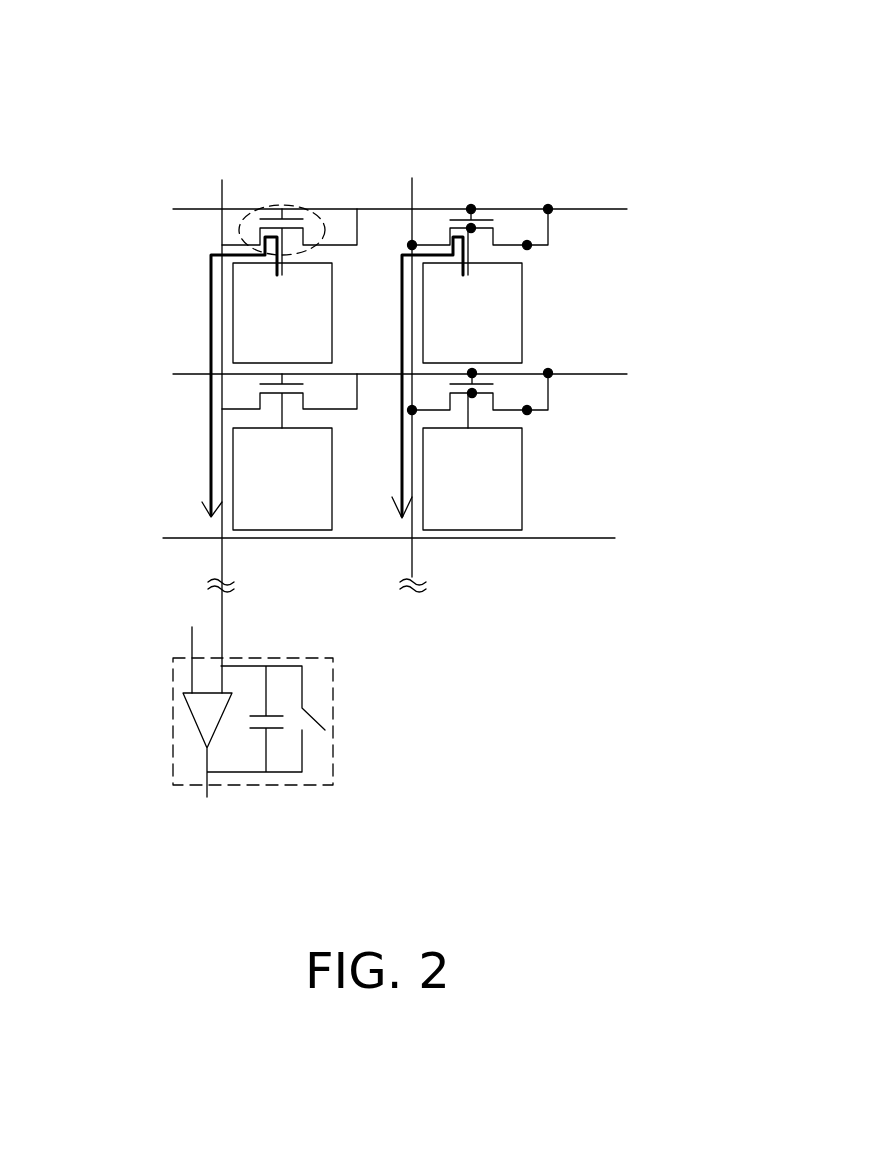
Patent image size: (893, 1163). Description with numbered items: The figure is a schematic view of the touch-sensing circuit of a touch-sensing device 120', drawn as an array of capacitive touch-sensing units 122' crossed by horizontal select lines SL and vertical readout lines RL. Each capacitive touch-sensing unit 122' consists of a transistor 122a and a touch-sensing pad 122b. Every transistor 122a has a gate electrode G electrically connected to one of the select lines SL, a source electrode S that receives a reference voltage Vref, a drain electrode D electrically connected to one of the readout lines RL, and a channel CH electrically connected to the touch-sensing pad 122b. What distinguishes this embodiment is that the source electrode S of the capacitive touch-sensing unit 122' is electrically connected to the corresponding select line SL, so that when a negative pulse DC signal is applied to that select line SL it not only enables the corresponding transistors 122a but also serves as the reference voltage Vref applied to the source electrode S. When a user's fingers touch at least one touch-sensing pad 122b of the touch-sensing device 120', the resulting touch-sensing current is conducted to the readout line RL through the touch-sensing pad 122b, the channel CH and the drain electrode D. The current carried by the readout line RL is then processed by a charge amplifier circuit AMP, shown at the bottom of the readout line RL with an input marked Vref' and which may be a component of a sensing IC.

The touch-sensing device 120' is at (449, 467).
The capacitive touch-sensing unit 122' is at (285, 144).
The transistor 122a is at (330, 67).
The touch-sensing pad 122b is at (317, 278).
The select line SL is at (198, 209).
The readout line RL is at (410, 183).
The drain electrode D is at (414, 245).
The gate electrode G is at (471, 207).
The channel CH is at (492, 230).
The source electrode S is at (530, 245).
The reference voltage Vref is at (618, 209).
The reference voltage input Vref' is at (181, 642).
The charge amplifier circuit AMP is at (333, 731).